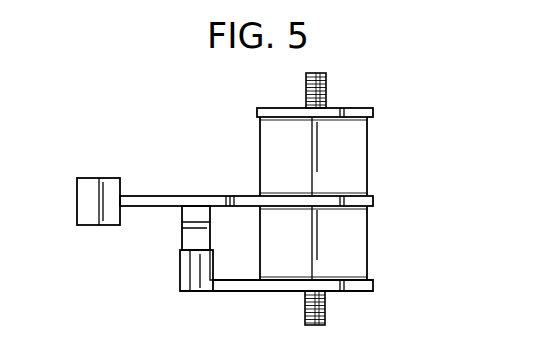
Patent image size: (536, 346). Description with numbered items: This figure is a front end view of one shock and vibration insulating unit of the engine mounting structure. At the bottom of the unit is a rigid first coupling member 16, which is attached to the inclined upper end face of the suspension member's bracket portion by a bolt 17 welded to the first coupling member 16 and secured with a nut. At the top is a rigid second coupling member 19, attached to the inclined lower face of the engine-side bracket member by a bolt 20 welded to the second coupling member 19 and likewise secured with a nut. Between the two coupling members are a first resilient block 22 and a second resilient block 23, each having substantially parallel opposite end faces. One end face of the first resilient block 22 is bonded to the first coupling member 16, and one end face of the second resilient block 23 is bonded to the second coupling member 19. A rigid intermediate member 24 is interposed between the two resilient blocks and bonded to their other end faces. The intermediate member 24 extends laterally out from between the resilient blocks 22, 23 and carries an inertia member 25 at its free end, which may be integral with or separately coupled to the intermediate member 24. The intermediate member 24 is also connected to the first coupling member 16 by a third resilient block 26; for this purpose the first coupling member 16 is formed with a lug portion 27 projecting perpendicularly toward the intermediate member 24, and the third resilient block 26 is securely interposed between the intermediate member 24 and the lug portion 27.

The first coupling member 16 is at (236, 291).
The bolt 17 is at (325, 312).
The second coupling member 19 is at (357, 108).
The bolt 20 is at (306, 87).
The first resilient block 22 is at (367, 245).
The second resilient block 23 is at (367, 158).
The intermediate member 24 is at (197, 196).
The inertia member 25 is at (101, 178).
The third resilient block 26 is at (182, 230).
The lug portion 27 is at (180, 272).